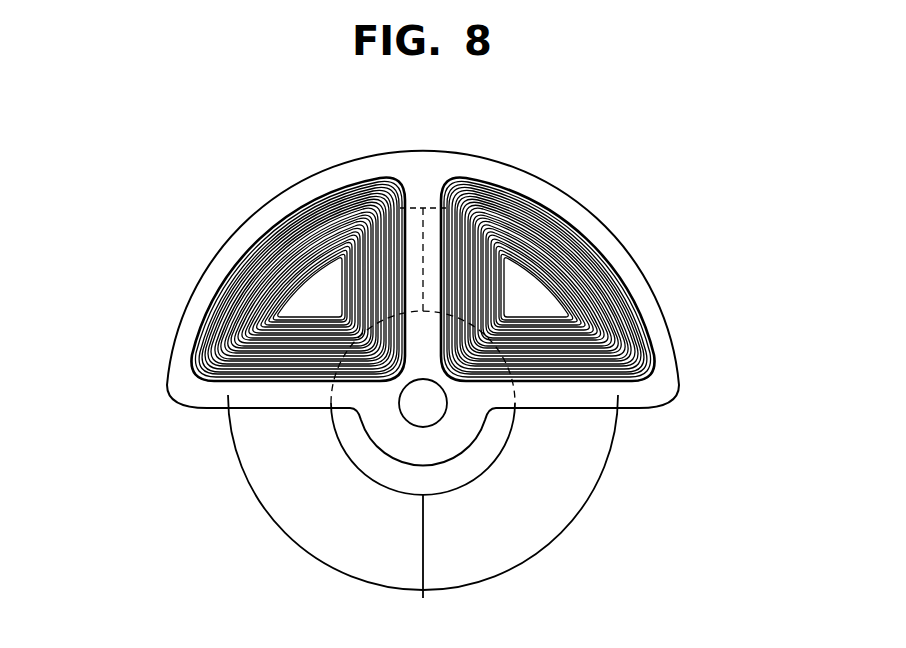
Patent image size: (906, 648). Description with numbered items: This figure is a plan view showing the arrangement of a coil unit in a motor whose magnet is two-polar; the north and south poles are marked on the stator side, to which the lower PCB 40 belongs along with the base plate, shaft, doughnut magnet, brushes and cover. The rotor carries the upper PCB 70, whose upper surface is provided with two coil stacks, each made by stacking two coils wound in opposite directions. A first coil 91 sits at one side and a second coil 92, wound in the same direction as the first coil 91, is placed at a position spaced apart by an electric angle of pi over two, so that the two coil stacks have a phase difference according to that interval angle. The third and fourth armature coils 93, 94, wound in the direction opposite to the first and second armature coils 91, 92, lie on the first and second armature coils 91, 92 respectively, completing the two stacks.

The upper PCB 70 is at (607, 241).
The lower PCB 40 is at (505, 560).
The first coil 91 is at (226, 362).
The second coil 92 is at (625, 363).
The third armature coil 93 is at (228, 389).
The fourth armature coil 94 is at (614, 392).